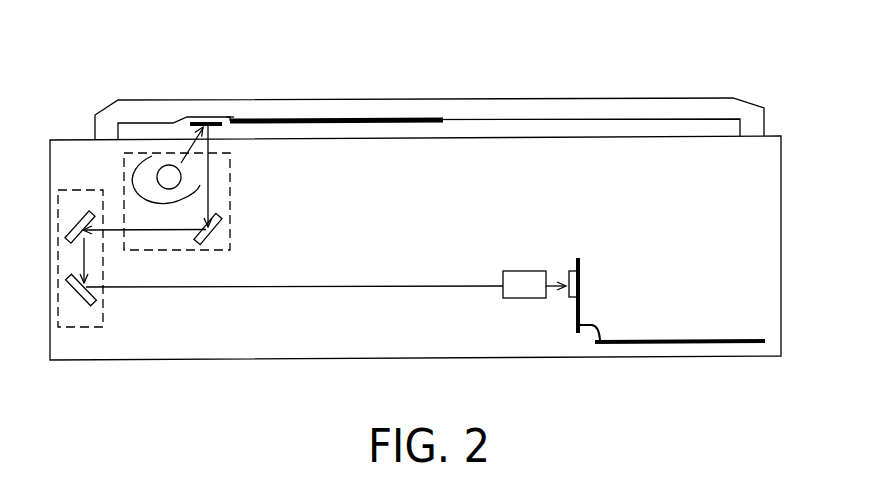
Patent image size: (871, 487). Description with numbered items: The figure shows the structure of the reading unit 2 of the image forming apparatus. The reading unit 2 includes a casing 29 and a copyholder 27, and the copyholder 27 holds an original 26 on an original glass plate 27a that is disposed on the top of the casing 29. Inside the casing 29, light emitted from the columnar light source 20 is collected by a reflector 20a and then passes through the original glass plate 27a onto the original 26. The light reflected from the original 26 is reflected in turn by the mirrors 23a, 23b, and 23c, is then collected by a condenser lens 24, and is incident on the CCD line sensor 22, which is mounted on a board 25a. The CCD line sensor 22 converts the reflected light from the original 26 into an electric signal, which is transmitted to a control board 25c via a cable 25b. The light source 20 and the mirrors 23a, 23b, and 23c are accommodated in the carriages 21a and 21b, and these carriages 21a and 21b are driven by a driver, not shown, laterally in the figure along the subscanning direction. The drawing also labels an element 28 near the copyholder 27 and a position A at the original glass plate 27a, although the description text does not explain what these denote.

The reading unit 2 is at (424, 80).
The columnar light source 20 is at (157, 178).
The reflector 20a is at (140, 198).
The carriage 21a is at (232, 177).
The carriage 21b is at (80, 328).
The CCD line sensor 22 is at (576, 257).
The mirror 23a is at (222, 228).
The mirror 23b is at (70, 228).
The mirror 23c is at (76, 293).
The condenser lens 24 is at (524, 300).
The board 25a is at (578, 274).
The cable 25b is at (592, 322).
The control board 25c is at (660, 340).
The original 26 is at (359, 117).
The copyholder 27 is at (564, 110).
The original glass plate 27a is at (616, 128).
The reference plate 28 is at (205, 118).
The casing 29 is at (781, 249).
The reference position A is at (230, 113).